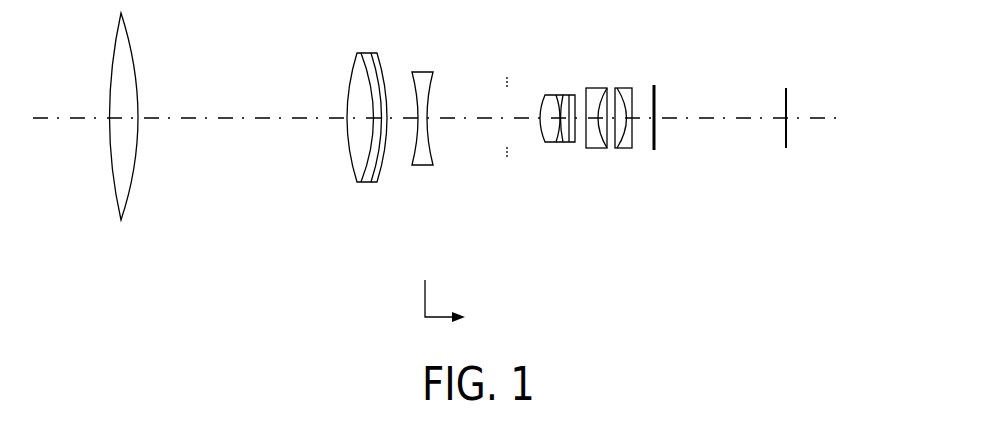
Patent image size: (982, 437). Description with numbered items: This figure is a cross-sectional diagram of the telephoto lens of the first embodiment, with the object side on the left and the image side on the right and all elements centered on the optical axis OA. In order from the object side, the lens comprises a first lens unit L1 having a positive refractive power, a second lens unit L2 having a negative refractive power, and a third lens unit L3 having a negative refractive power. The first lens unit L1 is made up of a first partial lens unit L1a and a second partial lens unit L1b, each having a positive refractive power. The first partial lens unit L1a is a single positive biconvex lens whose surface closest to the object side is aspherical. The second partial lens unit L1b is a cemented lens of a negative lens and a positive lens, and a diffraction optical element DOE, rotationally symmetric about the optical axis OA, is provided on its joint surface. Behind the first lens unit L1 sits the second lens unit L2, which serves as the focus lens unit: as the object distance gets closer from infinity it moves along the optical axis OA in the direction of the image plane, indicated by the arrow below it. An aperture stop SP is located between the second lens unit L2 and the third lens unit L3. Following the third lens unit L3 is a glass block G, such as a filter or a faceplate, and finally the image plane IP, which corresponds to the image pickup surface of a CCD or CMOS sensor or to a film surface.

The first lens unit L1 is at (248, 172).
The first partial lens unit L1a is at (147, 232).
The second partial lens unit L1b is at (323, 150).
The diffraction optical element DOE is at (360, 62).
The second lens unit L2 is at (442, 232).
The aperture stop SP is at (507, 80).
The third lens unit L3 is at (657, 232).
The glass block G is at (656, 88).
The optical axis OA is at (690, 118).
The image plane IP is at (788, 95).